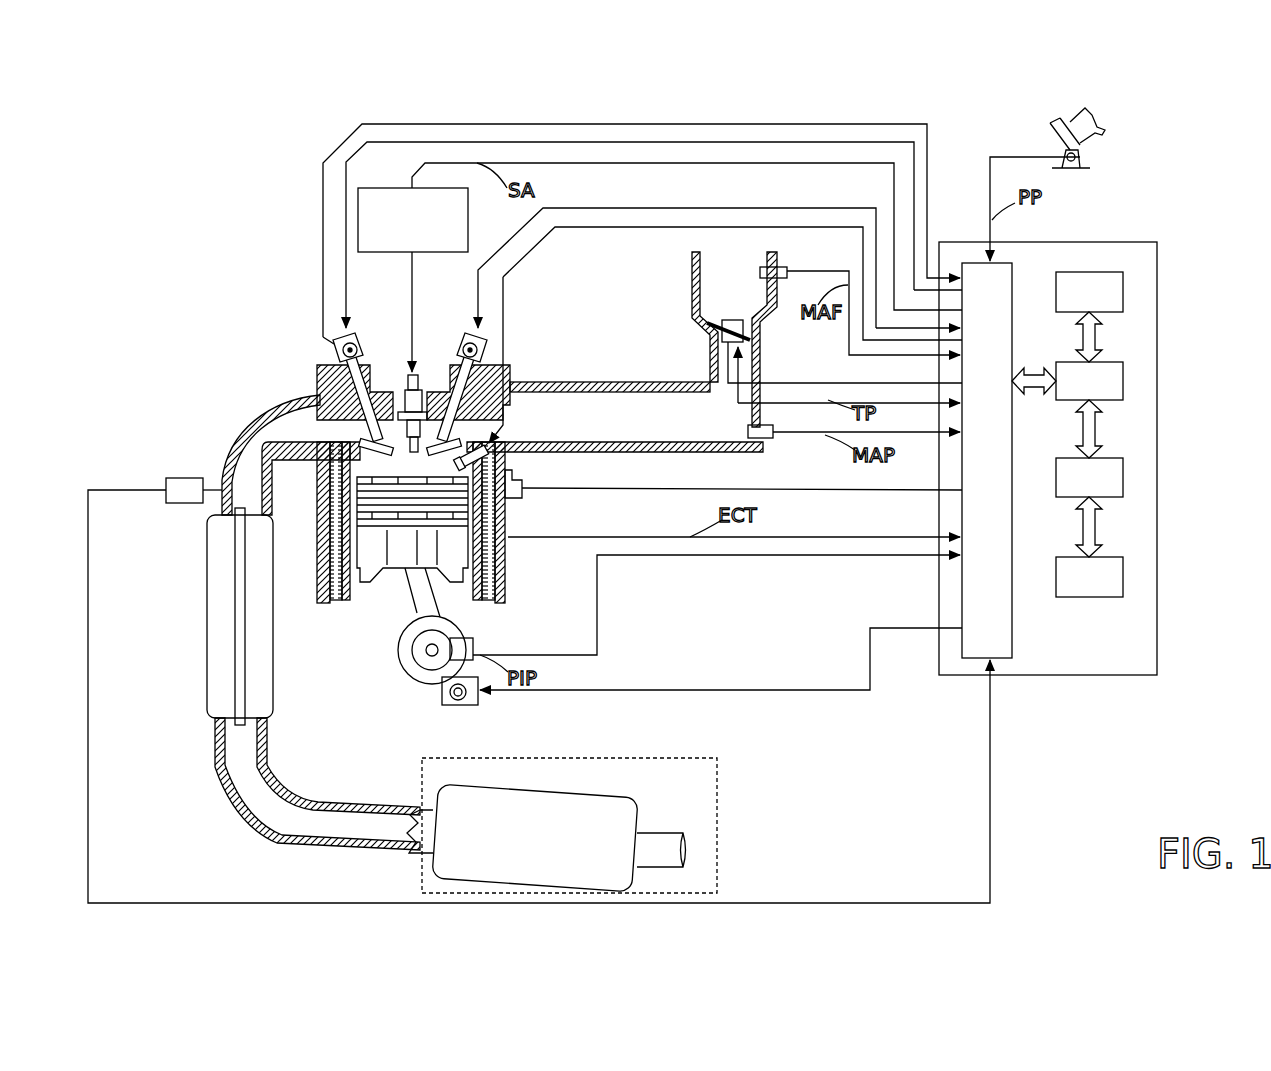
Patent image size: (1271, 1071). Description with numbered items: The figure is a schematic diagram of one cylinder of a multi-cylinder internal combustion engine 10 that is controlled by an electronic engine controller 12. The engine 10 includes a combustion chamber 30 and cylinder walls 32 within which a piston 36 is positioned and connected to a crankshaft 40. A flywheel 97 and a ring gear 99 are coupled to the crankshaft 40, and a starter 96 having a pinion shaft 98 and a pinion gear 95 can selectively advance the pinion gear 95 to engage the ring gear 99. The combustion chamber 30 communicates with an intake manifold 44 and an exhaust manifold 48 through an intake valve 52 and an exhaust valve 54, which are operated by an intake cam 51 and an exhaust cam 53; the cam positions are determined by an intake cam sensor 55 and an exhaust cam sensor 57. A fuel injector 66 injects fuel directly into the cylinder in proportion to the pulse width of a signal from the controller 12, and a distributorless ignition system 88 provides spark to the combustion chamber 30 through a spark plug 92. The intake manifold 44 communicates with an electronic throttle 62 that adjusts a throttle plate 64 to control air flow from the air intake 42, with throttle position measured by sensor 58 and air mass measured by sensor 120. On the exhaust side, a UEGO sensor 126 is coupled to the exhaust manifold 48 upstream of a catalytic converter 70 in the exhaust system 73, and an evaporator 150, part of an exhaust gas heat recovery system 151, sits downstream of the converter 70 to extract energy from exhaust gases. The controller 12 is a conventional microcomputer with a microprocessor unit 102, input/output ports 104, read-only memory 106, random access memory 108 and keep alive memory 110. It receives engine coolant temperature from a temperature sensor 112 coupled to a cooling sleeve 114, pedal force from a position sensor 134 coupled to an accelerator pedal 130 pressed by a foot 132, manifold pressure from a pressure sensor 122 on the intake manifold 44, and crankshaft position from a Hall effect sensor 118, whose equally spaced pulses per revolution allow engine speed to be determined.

The internal combustion engine 10 is at (258, 318).
The electronic engine controller 12 is at (1147, 242).
The combustion chamber 30 is at (350, 540).
The cylinder walls 32 is at (360, 593).
The piston 36 is at (397, 557).
The crankshaft 40 is at (418, 677).
The air intake 42 is at (734, 339).
The intake manifold 44 is at (610, 406).
The exhaust manifold 48 is at (271, 455).
The intake cam 51 is at (468, 335).
The intake valve 52 is at (483, 427).
The exhaust cam 53 is at (350, 335).
The exhaust valve 54 is at (345, 420).
The intake cam sensor 55 is at (484, 349).
The exhaust cam sensor 57 is at (338, 348).
The throttle position sensor 58 is at (712, 342).
The electronic throttle 62 is at (745, 328).
The throttle plate 64 is at (707, 330).
The fuel injector 66 is at (486, 460).
The catalytic converter 70 is at (207, 555).
The exhaust system 73 is at (183, 785).
The distributorless ignition system 88 is at (372, 188).
The spark plug 92 is at (416, 373).
The pinion gear 95 is at (461, 705).
The starter 96 is at (470, 705).
The flywheel 97 is at (408, 650).
The pinion shaft 98 is at (453, 700).
The ring gear 99 is at (438, 688).
The microprocessor unit 102 is at (1123, 380).
The input/output ports 104 is at (1013, 270).
The read-only memory 106 is at (1123, 290).
The random access memory 108 is at (1123, 478).
The keep alive memory 110 is at (1123, 575).
The temperature sensor 112 is at (522, 490).
The cooling sleeve 114 is at (512, 575).
The Hall effect sensor 118 is at (473, 640).
The air mass sensor 120 is at (782, 265).
The pressure sensor 122 is at (770, 440).
The Universal Exhaust Gas Oxygen sensor 126 is at (166, 482).
The accelerator pedal 130 is at (1048, 133).
The foot 132 is at (1100, 118).
The position sensor 134 is at (1085, 157).
The evaporator 150 is at (565, 805).
The exhaust gas heat recovery system 151 is at (717, 758).